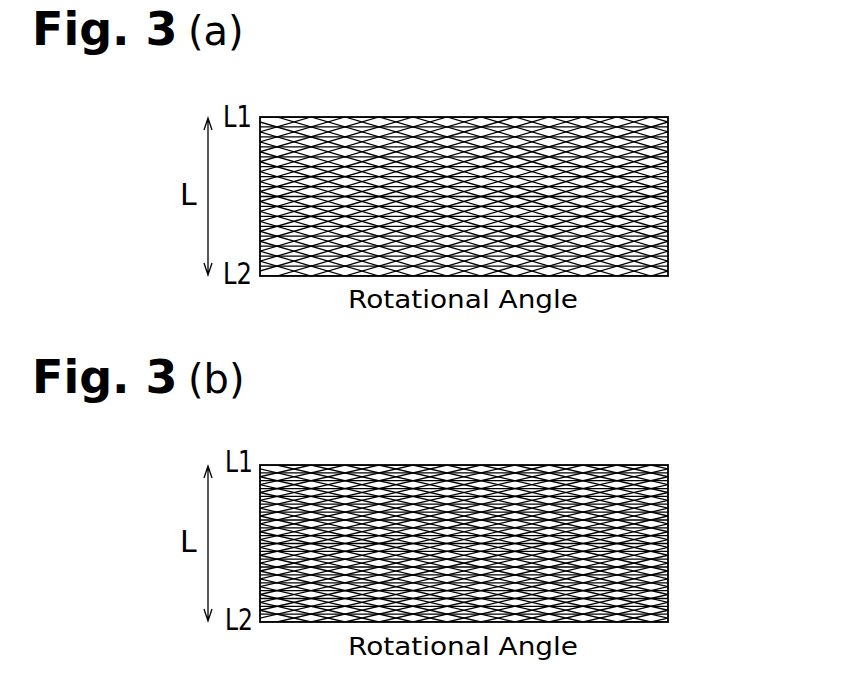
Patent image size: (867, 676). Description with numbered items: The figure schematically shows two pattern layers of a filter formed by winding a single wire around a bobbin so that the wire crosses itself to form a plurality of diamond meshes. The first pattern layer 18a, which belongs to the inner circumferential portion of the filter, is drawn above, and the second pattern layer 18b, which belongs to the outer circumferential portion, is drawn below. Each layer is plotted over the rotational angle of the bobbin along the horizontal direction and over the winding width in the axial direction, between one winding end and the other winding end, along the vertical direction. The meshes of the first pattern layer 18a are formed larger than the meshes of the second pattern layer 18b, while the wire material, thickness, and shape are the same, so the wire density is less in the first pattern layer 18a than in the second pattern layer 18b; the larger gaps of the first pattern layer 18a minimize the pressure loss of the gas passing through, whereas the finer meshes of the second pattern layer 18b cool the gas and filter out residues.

The first pattern layer 18a is at (433, 169).
The second pattern layer 18b is at (433, 515).